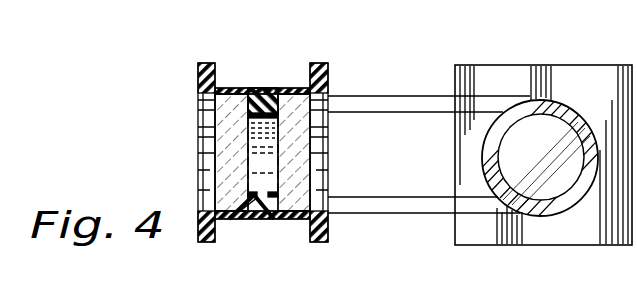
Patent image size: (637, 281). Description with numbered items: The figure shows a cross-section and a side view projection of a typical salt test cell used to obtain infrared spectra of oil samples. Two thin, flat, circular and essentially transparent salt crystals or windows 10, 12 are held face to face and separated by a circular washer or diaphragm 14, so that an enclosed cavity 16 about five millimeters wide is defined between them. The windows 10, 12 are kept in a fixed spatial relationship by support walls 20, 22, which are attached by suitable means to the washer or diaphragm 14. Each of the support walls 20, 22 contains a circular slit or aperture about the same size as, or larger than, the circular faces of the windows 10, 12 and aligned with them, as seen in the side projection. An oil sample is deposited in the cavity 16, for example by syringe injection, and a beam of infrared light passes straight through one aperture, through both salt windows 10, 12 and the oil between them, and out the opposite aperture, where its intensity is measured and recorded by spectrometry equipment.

The salt crystal window 10 is at (237, 96).
The salt crystal window 12 is at (290, 93).
The washer or diaphragm 14 is at (261, 221).
The cavity 16 is at (266, 160).
The support wall 20 is at (204, 62).
The support wall 22 is at (322, 63).